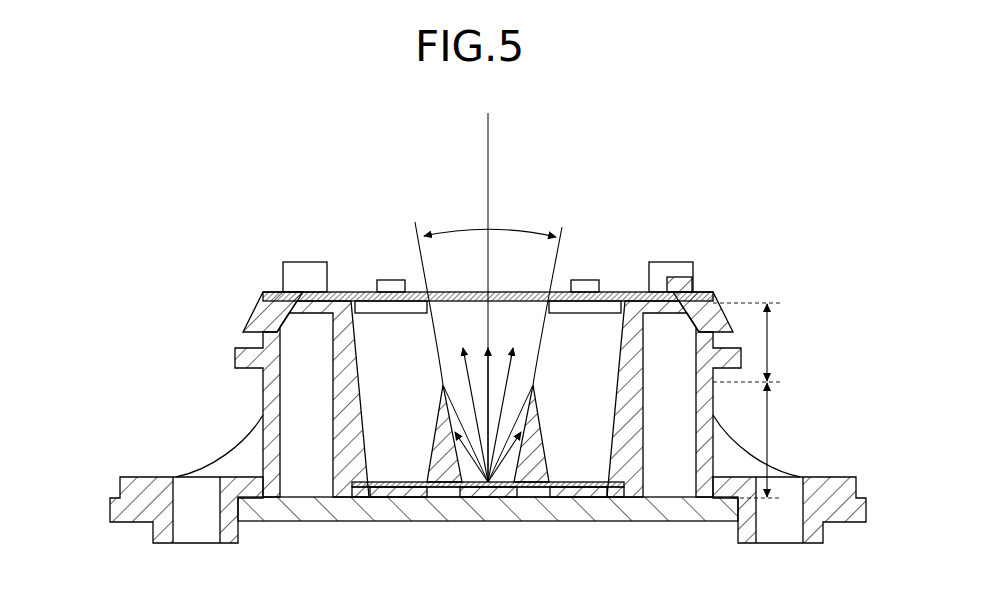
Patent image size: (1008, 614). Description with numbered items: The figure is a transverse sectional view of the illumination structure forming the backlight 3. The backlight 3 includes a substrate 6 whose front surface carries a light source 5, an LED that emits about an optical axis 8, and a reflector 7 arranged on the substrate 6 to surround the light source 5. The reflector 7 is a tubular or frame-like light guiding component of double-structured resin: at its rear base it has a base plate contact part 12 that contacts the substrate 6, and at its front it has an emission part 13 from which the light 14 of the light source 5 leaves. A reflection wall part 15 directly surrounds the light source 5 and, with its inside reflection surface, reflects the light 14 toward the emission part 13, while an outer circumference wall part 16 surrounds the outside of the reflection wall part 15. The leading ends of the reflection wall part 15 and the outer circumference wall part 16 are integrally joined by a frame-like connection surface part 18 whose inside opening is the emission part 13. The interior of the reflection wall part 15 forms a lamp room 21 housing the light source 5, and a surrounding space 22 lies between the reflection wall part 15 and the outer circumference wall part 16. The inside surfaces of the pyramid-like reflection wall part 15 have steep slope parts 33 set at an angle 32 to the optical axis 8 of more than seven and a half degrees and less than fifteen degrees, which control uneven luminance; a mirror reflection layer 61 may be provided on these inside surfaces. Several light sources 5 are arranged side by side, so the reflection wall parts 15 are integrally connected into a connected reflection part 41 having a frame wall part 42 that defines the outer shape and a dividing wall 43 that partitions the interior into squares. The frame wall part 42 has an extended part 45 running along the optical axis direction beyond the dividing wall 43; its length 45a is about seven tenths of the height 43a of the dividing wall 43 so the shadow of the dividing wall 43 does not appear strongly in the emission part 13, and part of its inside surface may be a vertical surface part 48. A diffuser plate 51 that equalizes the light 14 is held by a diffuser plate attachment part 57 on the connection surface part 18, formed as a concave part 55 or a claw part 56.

The backlight 3 is at (757, 240).
The light source 5 is at (397, 495).
The substrate 6 is at (663, 522).
The reflector 7 is at (158, 373).
The optical axis 8 is at (488, 175).
The base plate contact part 12 is at (262, 505).
The emission part 13 is at (328, 352).
The light 14 is at (520, 346).
The reflection wall part 15 is at (445, 307).
The outer circumference wall part 16 is at (257, 300).
The connection surface part 18 is at (300, 288).
The lamp room 21 is at (333, 352).
The surrounding space 22 is at (317, 443).
The angle 32 is at (462, 229).
The steep slope part 33 is at (489, 433).
The connected reflection part 41 is at (257, 338).
The frame wall part 42 is at (618, 393).
The dividing wall 43 is at (549, 396).
The height of the dividing wall 43a is at (769, 437).
The extended part 45 is at (675, 269).
The length of the extended part 45a is at (769, 342).
The vertical surface part 48 is at (614, 337).
The diffuser plate 51 is at (457, 292).
The concave part 55 is at (342, 292).
The claw part 56 is at (388, 280).
The diffuser plate attachment part 57 is at (430, 172).
The mirror reflection layer 61 is at (428, 465).